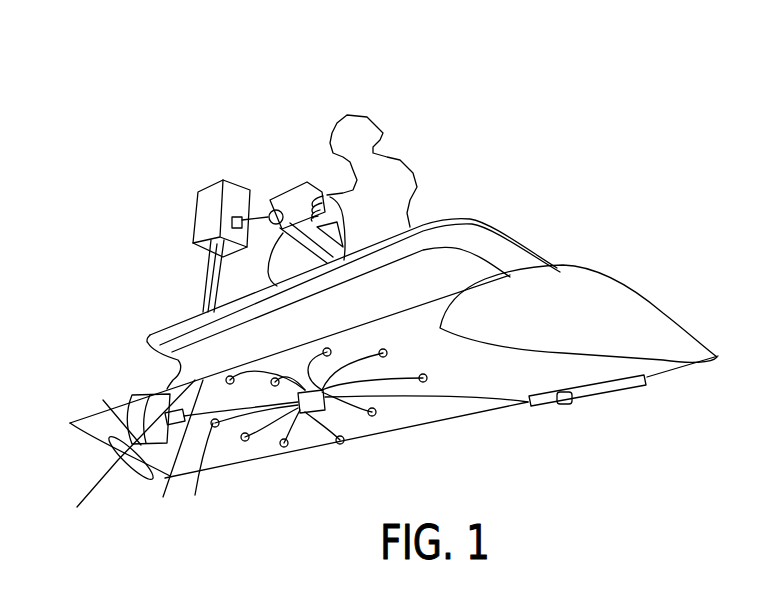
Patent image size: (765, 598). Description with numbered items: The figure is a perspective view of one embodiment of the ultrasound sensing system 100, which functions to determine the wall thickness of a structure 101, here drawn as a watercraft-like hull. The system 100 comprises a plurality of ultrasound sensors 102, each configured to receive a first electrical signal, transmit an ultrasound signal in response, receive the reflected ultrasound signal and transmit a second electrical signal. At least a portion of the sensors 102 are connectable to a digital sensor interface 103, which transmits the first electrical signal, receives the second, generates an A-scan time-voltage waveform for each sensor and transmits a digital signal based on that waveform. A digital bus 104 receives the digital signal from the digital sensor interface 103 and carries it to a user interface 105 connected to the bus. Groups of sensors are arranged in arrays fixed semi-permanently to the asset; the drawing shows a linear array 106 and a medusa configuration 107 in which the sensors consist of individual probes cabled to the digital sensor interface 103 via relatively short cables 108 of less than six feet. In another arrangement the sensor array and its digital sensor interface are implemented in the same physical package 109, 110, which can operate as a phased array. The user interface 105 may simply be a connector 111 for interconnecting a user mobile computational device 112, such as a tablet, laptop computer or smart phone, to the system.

The ultrasound sensing system 100 is at (638, 86).
The structure 101 is at (643, 290).
The ultrasound sensor 102 is at (627, 410).
The digital sensor interface 103 is at (147, 410).
The digital bus 104 is at (175, 466).
The user interface 105 is at (198, 215).
The linear array 106 is at (648, 383).
The medusa configuration 107 is at (260, 465).
The cables 108 is at (296, 447).
The physical package 109 is at (120, 457).
The physical package 110 is at (577, 404).
The connector 111 is at (235, 182).
The user mobile computational device 112 is at (293, 185).